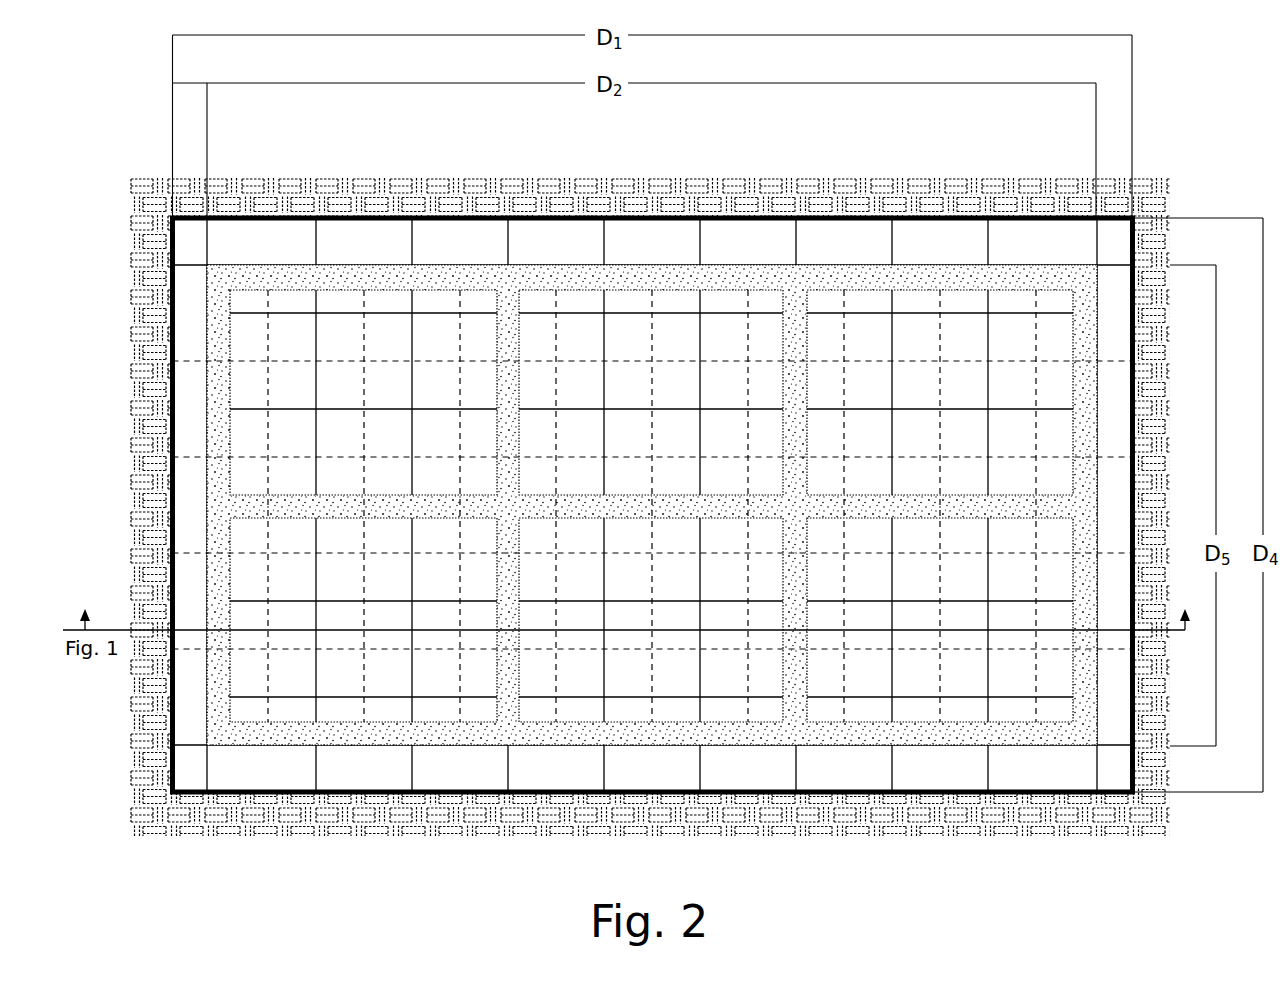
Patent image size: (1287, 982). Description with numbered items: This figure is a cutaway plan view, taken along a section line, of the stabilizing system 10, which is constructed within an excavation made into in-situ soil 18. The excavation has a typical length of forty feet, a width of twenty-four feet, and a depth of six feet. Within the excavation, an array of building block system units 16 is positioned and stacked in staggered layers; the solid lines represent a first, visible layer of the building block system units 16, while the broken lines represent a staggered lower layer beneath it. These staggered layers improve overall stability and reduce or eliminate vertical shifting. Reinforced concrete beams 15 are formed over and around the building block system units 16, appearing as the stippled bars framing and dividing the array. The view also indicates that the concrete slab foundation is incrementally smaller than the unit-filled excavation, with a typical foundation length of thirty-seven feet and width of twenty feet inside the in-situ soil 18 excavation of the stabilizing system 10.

The stabilizing system 10 is at (122, 128).
The reinforced concrete beams 15 is at (493, 383).
The building block system units 16 is at (668, 337).
The in-situ soil 18 is at (590, 187).